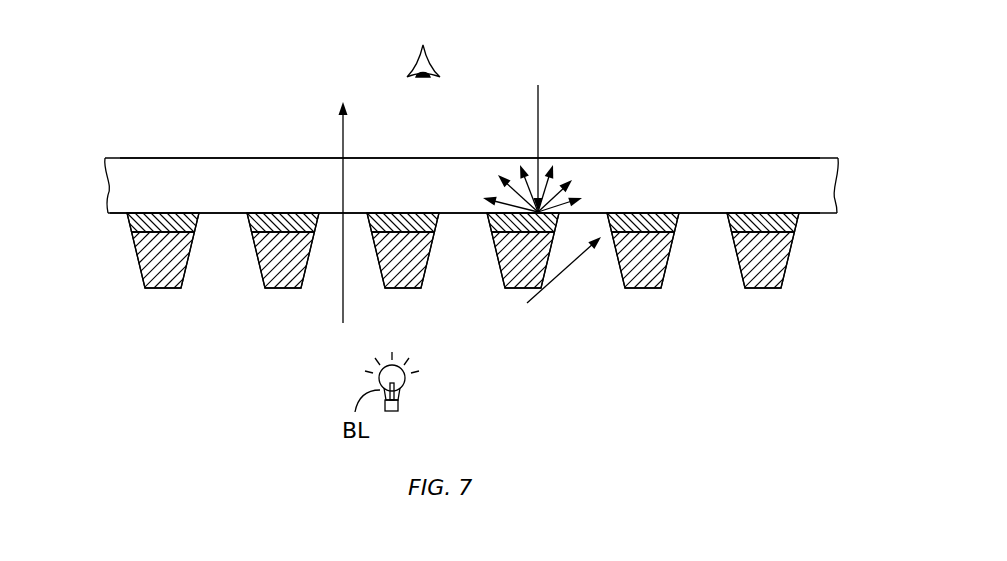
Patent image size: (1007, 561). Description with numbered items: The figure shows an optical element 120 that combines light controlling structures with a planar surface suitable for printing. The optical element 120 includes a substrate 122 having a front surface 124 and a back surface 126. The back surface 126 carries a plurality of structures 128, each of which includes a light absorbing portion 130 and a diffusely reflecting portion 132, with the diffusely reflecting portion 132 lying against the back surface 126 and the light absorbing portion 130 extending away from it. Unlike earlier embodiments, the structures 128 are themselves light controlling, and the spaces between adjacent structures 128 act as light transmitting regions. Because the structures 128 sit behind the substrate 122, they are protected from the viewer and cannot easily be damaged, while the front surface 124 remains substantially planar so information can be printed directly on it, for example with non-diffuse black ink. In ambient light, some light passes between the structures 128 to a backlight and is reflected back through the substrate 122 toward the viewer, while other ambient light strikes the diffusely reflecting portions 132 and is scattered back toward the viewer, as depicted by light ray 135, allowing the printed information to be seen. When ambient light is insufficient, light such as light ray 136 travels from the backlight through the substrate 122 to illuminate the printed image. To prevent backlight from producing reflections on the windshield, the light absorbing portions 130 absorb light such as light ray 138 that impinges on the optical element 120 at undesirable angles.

The optical element 120 is at (448, 200).
The substrate 122 is at (111, 182).
The front surface 124 is at (147, 152).
The back surface 126 is at (112, 220).
The structures 128 is at (272, 294).
The light absorbing portion 130 is at (258, 255).
The diffusely reflecting portion 132 is at (275, 213).
The light ray 135 is at (538, 98).
The light ray 136 is at (343, 136).
The light ray 138 is at (560, 276).